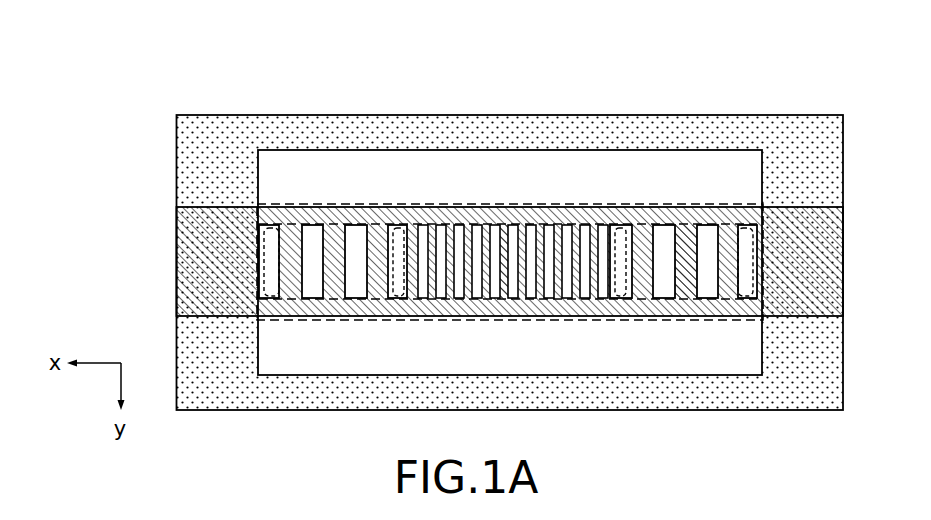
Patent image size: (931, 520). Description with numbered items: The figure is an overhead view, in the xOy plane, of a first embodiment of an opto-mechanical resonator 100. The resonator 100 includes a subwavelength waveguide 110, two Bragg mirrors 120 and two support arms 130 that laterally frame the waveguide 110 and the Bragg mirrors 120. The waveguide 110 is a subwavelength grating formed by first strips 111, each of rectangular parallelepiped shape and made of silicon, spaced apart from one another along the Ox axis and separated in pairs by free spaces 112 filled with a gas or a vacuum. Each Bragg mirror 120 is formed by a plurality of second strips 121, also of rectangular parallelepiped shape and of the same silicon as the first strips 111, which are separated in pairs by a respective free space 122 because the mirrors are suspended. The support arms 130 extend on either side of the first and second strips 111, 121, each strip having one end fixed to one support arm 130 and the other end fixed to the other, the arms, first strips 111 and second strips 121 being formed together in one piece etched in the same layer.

The opto-mechanical resonator 100 is at (136, 120).
The subwavelength waveguide 110 is at (398, 232).
The first strips 111 is at (501, 233).
The free spaces 112 is at (510, 233).
The Bragg mirrors 120 is at (271, 227).
The second strips 121 is at (687, 296).
The free space 122 is at (708, 292).
The support arms 130 is at (610, 205).